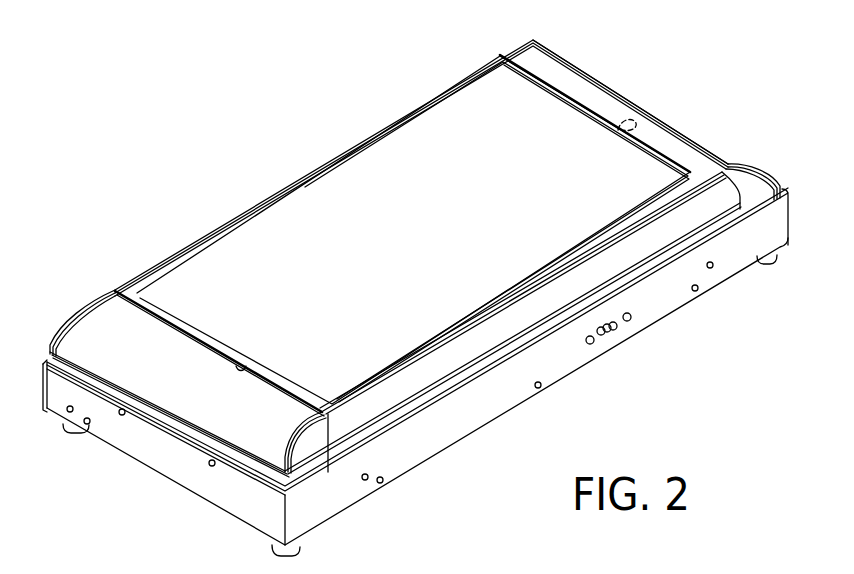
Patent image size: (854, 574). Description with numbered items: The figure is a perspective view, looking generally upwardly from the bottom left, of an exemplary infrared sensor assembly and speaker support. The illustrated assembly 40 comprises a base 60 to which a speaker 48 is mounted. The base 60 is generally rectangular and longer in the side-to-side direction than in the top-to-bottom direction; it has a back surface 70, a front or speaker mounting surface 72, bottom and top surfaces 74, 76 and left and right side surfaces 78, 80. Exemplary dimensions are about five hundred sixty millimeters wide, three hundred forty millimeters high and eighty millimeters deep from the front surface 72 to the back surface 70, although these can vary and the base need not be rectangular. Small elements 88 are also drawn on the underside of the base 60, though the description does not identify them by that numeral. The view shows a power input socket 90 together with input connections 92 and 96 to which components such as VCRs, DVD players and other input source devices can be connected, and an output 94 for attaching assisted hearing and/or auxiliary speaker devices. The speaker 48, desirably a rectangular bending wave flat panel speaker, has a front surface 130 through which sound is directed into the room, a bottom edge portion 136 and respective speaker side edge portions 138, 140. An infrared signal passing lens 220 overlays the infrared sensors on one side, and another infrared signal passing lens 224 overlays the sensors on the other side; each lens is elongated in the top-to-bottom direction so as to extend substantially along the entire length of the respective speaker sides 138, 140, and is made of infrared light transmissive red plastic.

The assembly 40 is at (654, 82).
The speaker 48 is at (363, 184).
The base 60 is at (650, 308).
The back surface 70 is at (457, 448).
The front or speaker mounting surface 72 is at (494, 392).
The bottom surface 74 is at (558, 368).
The top surface 76 is at (44, 372).
The left side surface 78 is at (208, 486).
The right side surface 80 is at (790, 206).
The feet 88 is at (77, 434).
The power input socket 90 is at (610, 334).
The input connection 92 is at (591, 346).
The output 94 is at (614, 332).
The input connection 96 is at (630, 322).
The front surface 130 is at (427, 136).
The bottom edge portion 136 is at (416, 395).
The speaker side edge portion 138 is at (236, 210).
The speaker side edge portion 140 is at (618, 127).
The infrared signal passing lens 220 is at (118, 337).
The infrared signal passing lens 224 is at (672, 118).